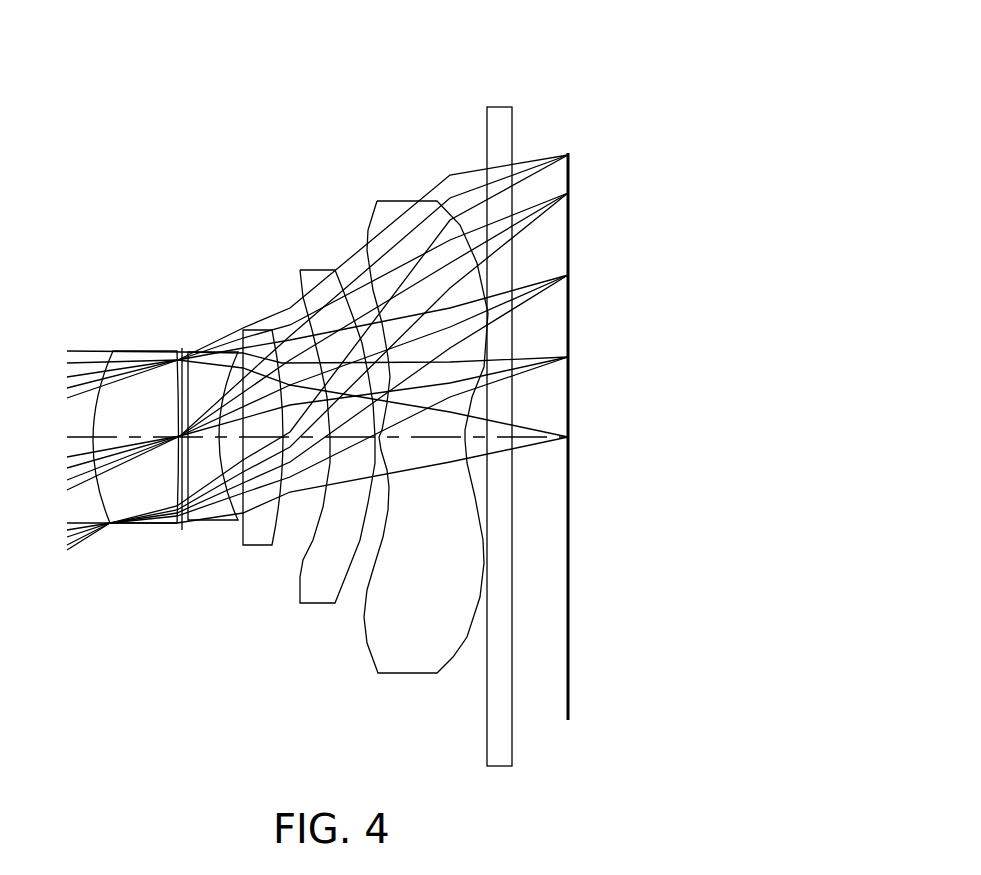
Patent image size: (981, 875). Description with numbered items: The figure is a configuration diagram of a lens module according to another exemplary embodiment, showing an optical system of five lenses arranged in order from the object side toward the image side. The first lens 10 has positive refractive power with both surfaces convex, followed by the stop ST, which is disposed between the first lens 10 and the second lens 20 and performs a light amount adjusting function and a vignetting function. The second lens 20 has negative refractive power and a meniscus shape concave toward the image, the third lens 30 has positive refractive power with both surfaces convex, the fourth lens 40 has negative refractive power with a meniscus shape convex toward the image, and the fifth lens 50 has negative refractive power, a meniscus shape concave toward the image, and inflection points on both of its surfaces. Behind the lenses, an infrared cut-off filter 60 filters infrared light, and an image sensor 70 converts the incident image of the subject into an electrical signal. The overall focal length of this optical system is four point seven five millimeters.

The first lens 10 is at (143, 378).
The second lens 20 is at (208, 378).
The third lens 30 is at (248, 328).
The fourth lens 40 is at (313, 295).
The fifth lens 50 is at (403, 228).
The infrared cut-off filter 60 is at (495, 118).
The image sensor 70 is at (572, 170).
The stop ST is at (181, 340).